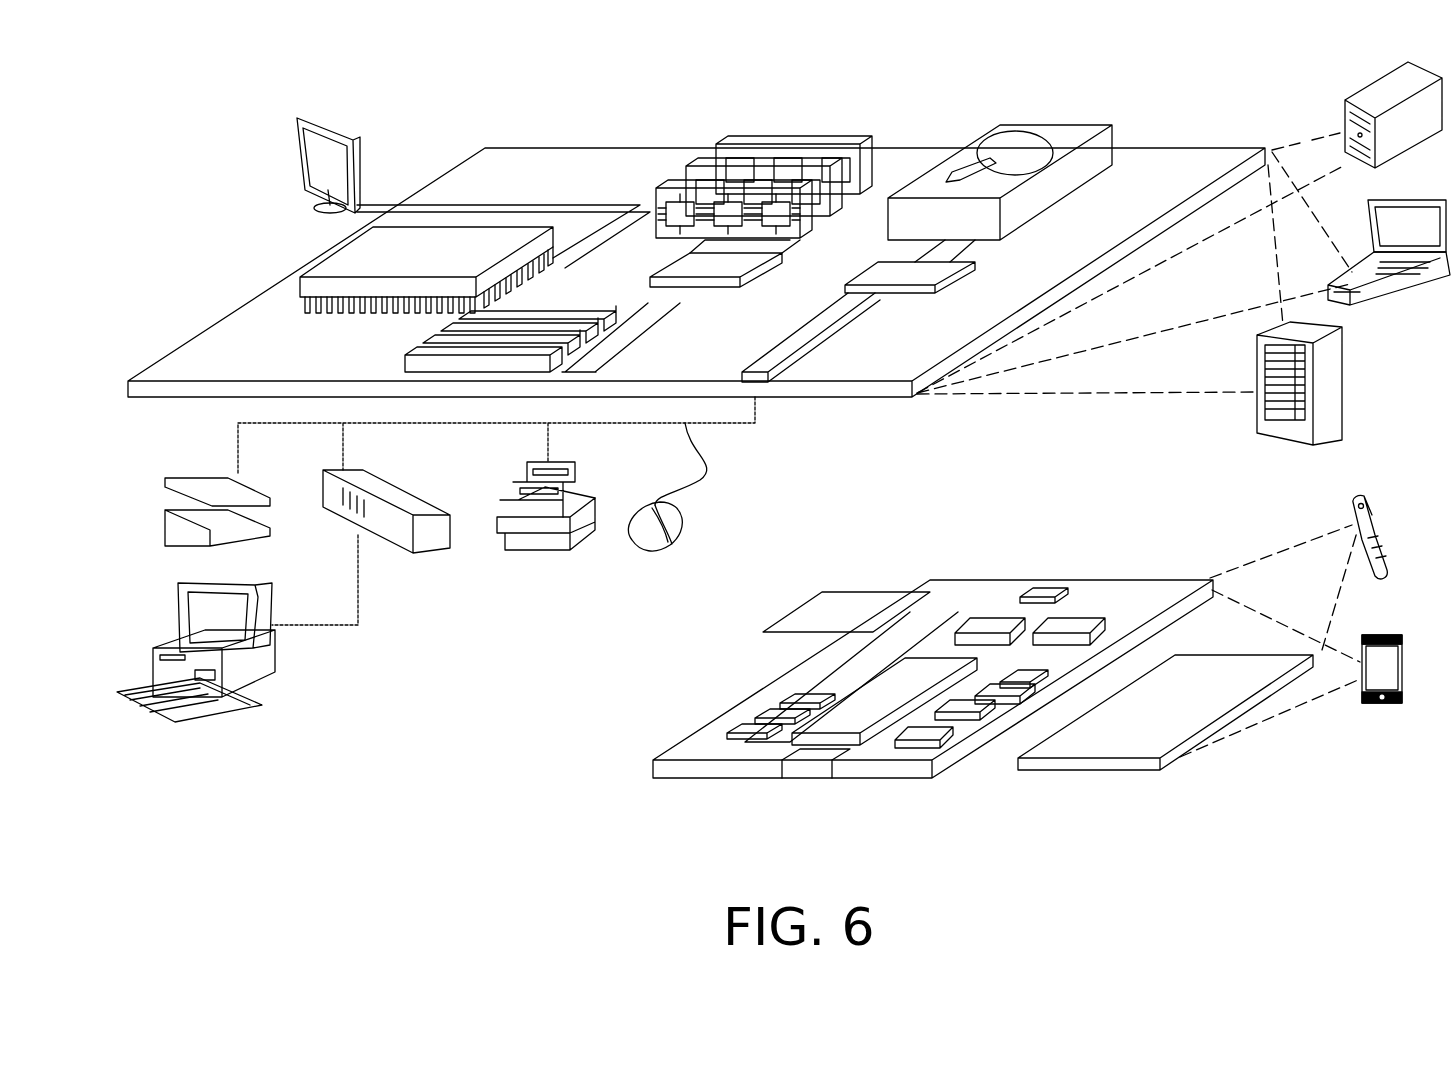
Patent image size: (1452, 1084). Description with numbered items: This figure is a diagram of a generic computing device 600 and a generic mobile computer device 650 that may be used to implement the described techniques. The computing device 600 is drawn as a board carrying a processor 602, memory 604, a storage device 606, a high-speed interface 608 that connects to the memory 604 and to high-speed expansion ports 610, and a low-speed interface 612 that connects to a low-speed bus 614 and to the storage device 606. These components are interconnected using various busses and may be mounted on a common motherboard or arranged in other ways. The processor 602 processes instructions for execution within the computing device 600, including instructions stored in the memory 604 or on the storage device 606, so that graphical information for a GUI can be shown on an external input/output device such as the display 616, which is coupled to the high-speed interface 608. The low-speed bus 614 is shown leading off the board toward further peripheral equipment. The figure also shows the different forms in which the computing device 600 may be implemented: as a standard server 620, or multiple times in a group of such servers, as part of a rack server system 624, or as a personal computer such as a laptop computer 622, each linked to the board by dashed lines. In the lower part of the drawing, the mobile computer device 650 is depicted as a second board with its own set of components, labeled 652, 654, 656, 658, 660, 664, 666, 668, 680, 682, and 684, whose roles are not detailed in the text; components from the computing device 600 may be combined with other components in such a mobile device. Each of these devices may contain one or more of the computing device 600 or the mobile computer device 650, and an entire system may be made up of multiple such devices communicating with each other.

The computing device 600 is at (443, 99).
The processor 602 is at (332, 258).
The memory 604 is at (802, 148).
The storage device 606 is at (1047, 127).
The high-speed interface 608 is at (740, 262).
The high-speed expansion ports 610 is at (437, 345).
The low-speed interface 612 is at (885, 272).
The low-speed bus 614 is at (762, 371).
The display 616 is at (302, 118).
The standard server 620 is at (1368, 94).
The laptop computer 622 is at (1425, 200).
The rack server system 624 is at (1343, 385).
The mobile computer device 650 is at (1249, 763).
The processor 652 is at (843, 708).
The display 654 is at (1208, 676).
The memory 656 is at (935, 738).
The communication interface 658 is at (985, 705).
The sensor 660 is at (1015, 676).
The input components 664 is at (760, 715).
The transceiver 666 is at (988, 613).
The GPS receiver 668 is at (1086, 613).
The mobile phone 680 is at (1044, 595).
The smartphone 682 is at (910, 600).
The battery 684 is at (822, 600).